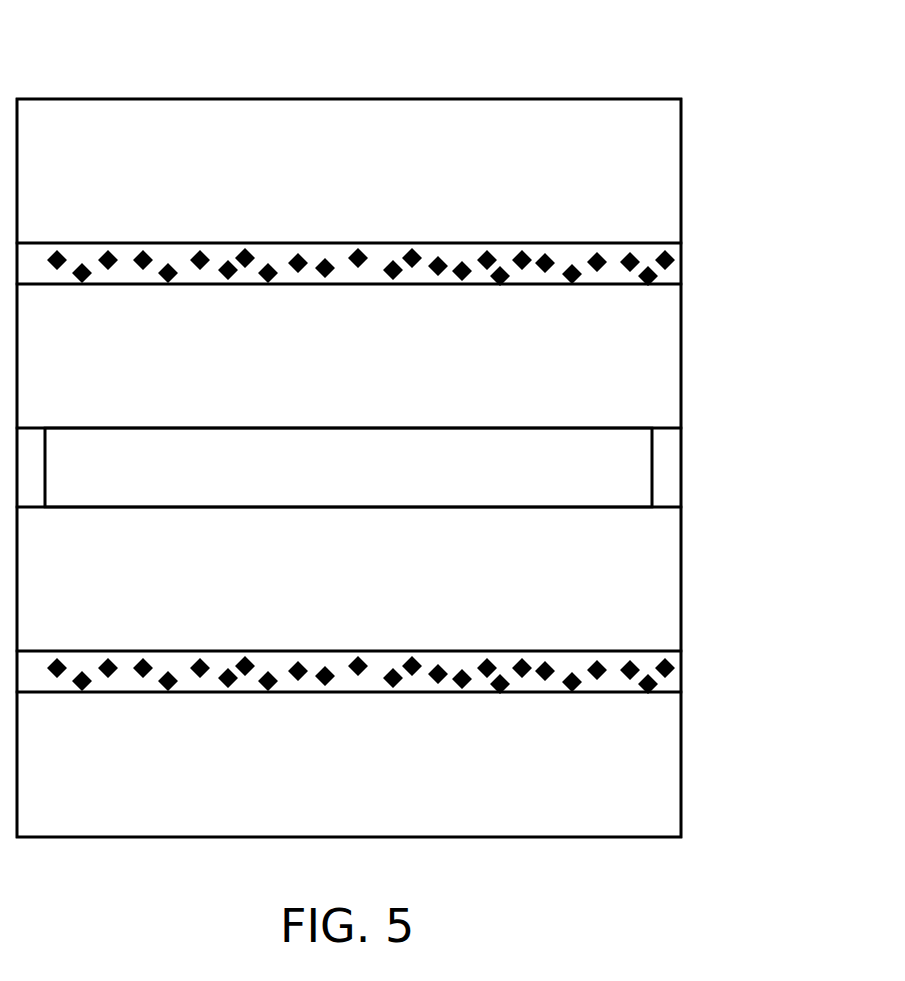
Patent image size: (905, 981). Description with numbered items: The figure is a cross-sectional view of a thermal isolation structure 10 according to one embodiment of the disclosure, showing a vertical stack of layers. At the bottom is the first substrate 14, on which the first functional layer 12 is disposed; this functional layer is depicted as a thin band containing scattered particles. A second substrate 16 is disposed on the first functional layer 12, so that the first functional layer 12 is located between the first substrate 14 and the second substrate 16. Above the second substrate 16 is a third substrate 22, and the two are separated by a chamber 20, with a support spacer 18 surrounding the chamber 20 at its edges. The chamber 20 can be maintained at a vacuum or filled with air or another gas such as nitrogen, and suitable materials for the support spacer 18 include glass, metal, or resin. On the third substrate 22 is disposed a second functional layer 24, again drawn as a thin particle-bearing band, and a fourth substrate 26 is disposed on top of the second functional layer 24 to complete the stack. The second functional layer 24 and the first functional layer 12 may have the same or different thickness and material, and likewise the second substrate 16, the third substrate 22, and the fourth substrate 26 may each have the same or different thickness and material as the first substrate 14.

The thermal isolation structure 10 is at (748, 40).
The first functional layer 12 is at (683, 672).
The first substrate 14 is at (683, 763).
The second substrate 16 is at (683, 578).
The support spacer 18 is at (683, 467).
The chamber 20 is at (368, 483).
The third substrate 22 is at (683, 355).
The second functional layer 24 is at (683, 263).
The fourth substrate 26 is at (683, 170).